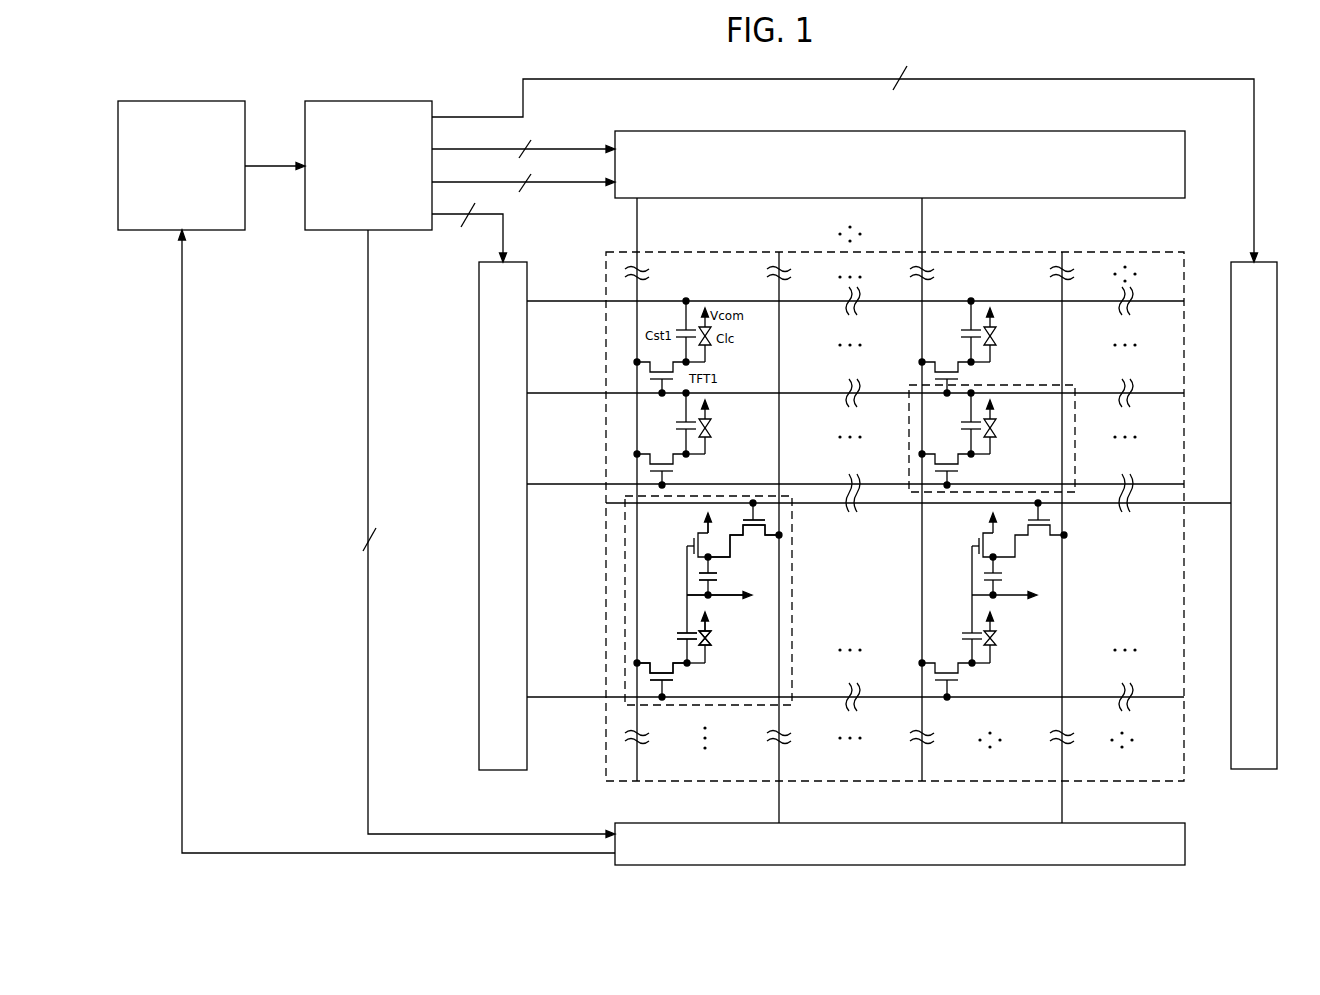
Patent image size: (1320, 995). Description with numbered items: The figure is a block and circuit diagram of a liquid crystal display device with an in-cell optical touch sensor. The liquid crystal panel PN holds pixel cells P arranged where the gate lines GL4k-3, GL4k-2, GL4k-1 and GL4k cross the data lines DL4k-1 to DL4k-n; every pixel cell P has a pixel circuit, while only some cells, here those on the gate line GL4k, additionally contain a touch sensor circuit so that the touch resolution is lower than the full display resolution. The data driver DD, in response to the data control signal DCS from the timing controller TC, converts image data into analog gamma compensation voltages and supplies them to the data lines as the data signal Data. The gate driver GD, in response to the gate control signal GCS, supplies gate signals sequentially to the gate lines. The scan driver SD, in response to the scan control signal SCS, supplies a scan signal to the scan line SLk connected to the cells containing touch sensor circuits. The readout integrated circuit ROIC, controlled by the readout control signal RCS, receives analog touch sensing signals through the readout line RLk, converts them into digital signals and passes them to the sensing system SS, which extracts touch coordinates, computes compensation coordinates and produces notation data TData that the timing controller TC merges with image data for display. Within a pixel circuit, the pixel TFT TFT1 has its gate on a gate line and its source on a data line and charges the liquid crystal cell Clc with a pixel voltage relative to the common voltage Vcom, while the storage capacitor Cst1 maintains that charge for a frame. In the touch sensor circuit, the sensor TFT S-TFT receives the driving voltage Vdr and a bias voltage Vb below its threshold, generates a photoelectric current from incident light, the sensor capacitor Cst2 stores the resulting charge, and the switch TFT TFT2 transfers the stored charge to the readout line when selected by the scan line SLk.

The sensing system SS is at (145, 231).
The timing controller TC is at (333, 231).
The data driver DD is at (1140, 130).
The gate driver GD is at (478, 614).
The scan driver SD is at (1255, 770).
The readout integrated circuit ROIC is at (1184, 853).
The liquid crystal panel PN is at (1140, 252).
The pixel cell P is at (792, 567).
The notation data TData is at (275, 157).
The data signal Data is at (523, 144).
The data control signal DCS is at (523, 177).
The gate control signal GCS is at (485, 232).
The scan control signal SCS is at (845, 161).
The readout control signal RCS is at (465, 534).
The gate line GL4k-3 is at (855, 290).
The gate line GL4k-2 is at (855, 382).
The gate line GL4k-1 is at (855, 473).
The gate line GL4k is at (855, 686).
The scan line SLk is at (918, 492).
The data line DL4k-1 is at (665, 489).
The data line DL4k-n is at (950, 489).
The readout line RLk is at (796, 537).
The sensor TFT S-TFT is at (708, 600).
The pixel TFT TFT1 is at (673, 676).
The switch TFT TFT2 is at (743, 538).
The storage capacitor Cst1 is at (671, 638).
The sensor capacitor Cst2 is at (723, 579).
The liquid crystal cell Clc is at (716, 639).
The driving voltage Vdr is at (692, 524).
The bias voltage Vb is at (730, 596).
The common voltage Vcom is at (725, 622).